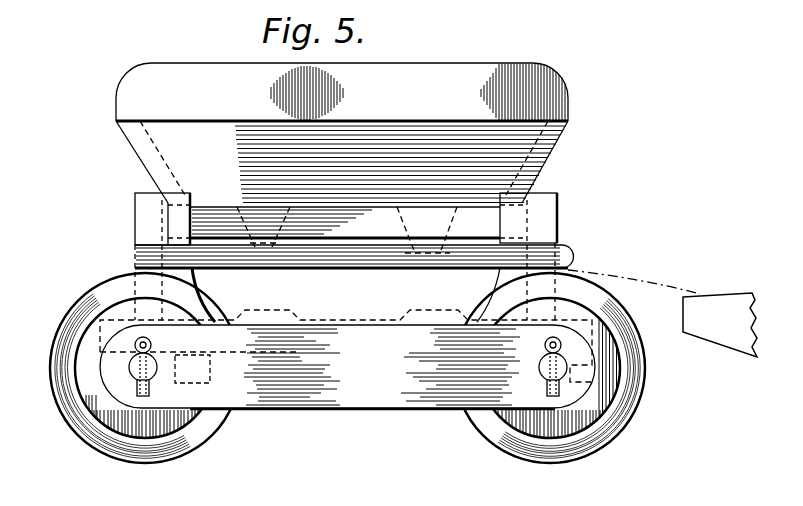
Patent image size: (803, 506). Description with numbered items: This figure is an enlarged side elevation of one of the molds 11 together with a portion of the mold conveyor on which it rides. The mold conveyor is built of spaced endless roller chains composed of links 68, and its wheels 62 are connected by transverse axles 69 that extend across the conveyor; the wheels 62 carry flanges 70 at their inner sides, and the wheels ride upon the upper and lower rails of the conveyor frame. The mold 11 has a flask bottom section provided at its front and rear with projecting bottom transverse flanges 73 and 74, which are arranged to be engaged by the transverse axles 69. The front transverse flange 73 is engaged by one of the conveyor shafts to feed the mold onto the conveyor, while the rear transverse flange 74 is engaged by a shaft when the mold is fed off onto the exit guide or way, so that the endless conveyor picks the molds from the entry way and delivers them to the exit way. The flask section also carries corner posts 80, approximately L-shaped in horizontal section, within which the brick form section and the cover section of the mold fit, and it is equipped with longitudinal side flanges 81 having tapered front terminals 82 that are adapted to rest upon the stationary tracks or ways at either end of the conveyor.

The mold 11 is at (540, 95).
The corner post 80 is at (166, 217).
The longitudinal side flange 81 is at (355, 266).
The tapered front terminal 82 is at (560, 256).
The flange 70 is at (153, 452).
The wheel 62 is at (112, 440).
The link 68 is at (333, 403).
The front transverse flange 73 is at (212, 374).
The transverse axle 69 is at (131, 370).
The rear transverse flange 74 is at (617, 383).